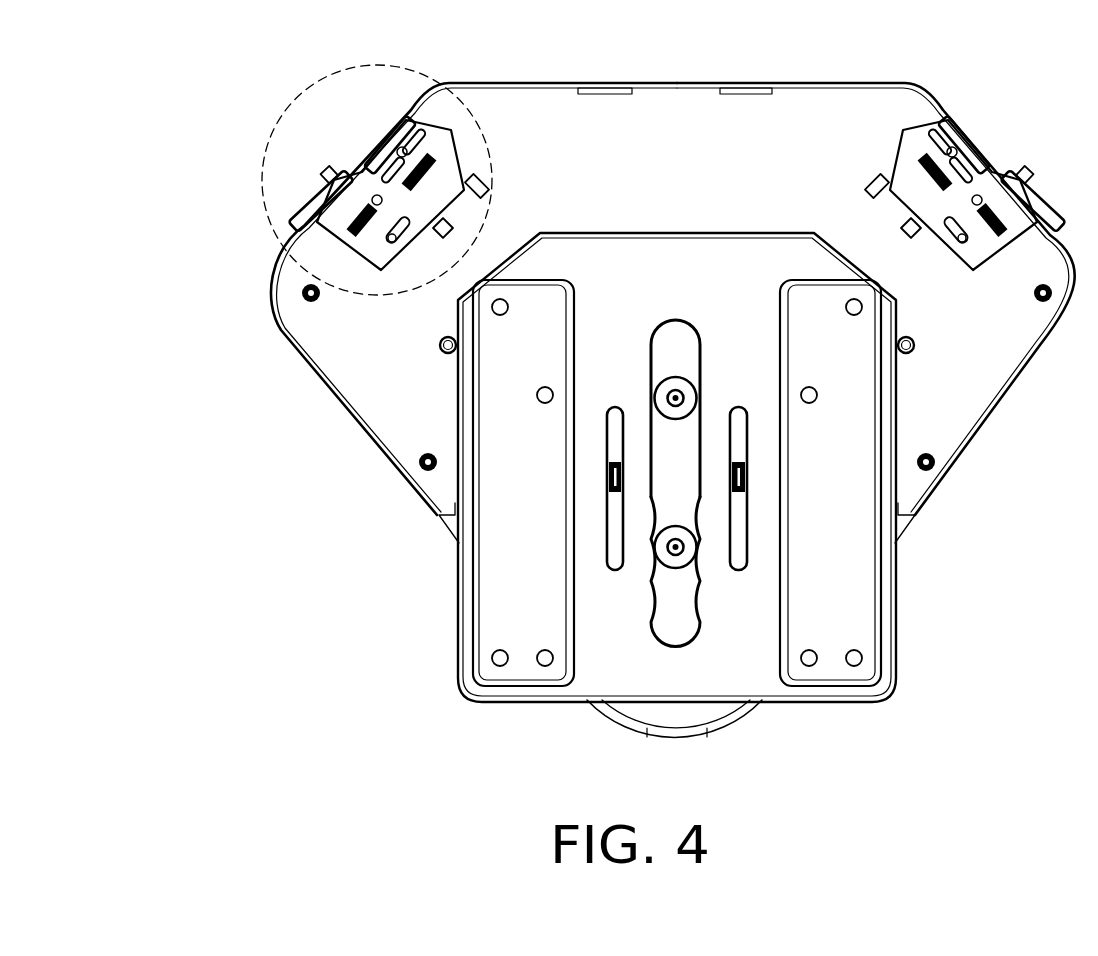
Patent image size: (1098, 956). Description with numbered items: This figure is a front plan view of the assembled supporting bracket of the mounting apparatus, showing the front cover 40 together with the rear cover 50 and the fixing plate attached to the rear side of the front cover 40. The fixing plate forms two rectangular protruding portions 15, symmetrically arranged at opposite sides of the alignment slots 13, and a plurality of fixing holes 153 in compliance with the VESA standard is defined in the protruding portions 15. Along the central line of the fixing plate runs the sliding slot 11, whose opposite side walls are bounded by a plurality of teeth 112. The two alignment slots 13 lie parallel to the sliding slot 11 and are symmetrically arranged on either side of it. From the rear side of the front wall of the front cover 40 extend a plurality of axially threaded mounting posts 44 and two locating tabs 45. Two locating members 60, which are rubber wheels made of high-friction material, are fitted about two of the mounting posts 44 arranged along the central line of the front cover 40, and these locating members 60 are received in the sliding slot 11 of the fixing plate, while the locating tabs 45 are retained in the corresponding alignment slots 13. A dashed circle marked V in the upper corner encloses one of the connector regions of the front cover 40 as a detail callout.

The front cover 40 is at (812, 128).
The rear cover 50 is at (675, 262).
The protruding portion 15 is at (507, 587).
The fixing hole 153 is at (500, 657).
The sliding slot 11 is at (688, 513).
The teeth 112 is at (690, 565).
The mounting post 44 is at (675, 549).
The locating member 60 is at (683, 558).
The alignment slot 13 is at (735, 432).
The locating tab 45 is at (746, 483).
The detail view circle V is at (272, 132).